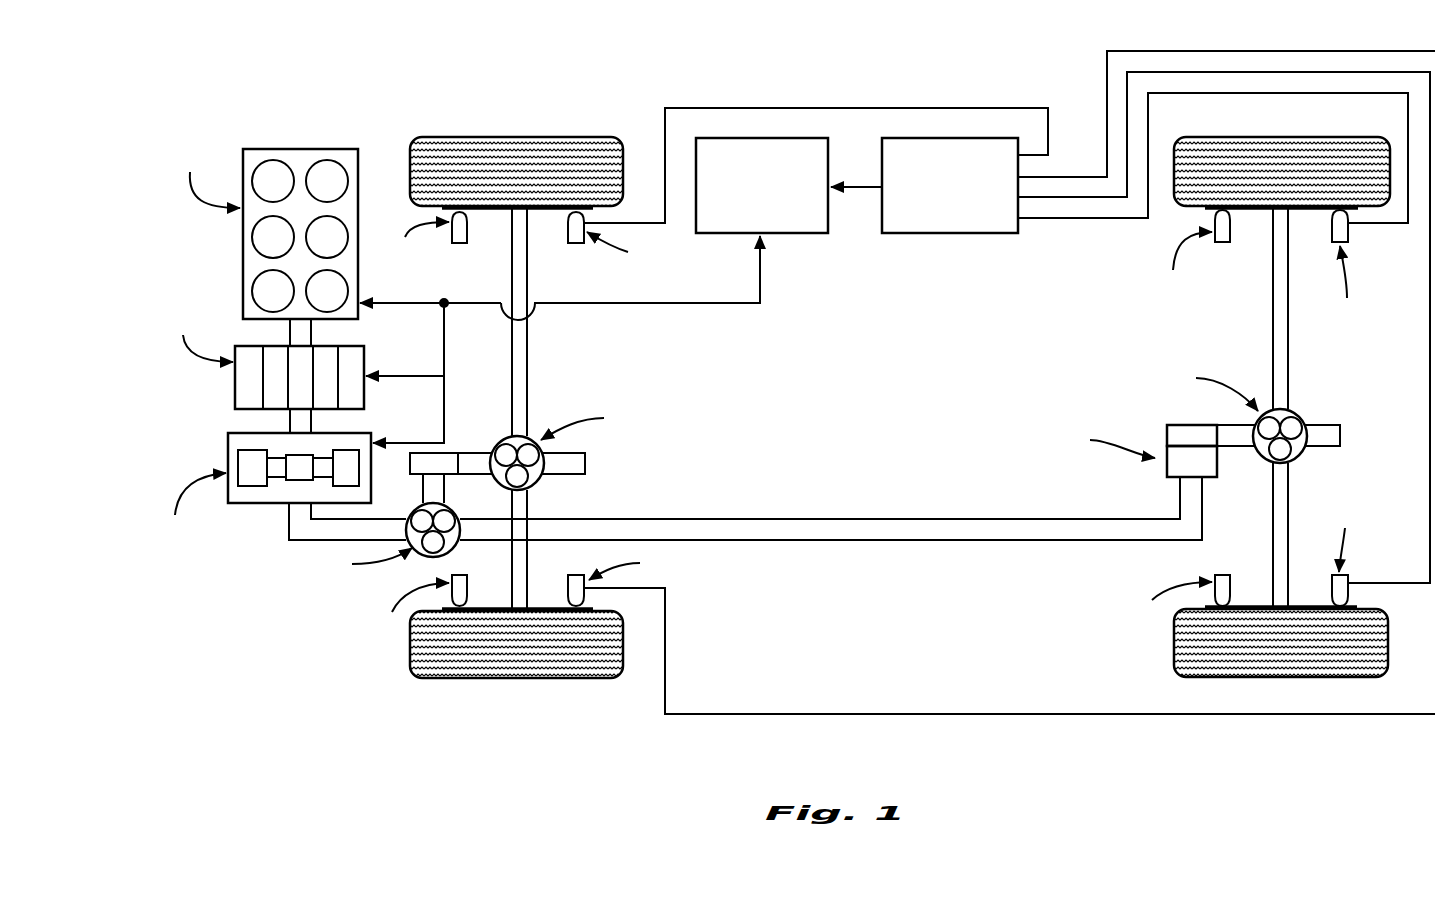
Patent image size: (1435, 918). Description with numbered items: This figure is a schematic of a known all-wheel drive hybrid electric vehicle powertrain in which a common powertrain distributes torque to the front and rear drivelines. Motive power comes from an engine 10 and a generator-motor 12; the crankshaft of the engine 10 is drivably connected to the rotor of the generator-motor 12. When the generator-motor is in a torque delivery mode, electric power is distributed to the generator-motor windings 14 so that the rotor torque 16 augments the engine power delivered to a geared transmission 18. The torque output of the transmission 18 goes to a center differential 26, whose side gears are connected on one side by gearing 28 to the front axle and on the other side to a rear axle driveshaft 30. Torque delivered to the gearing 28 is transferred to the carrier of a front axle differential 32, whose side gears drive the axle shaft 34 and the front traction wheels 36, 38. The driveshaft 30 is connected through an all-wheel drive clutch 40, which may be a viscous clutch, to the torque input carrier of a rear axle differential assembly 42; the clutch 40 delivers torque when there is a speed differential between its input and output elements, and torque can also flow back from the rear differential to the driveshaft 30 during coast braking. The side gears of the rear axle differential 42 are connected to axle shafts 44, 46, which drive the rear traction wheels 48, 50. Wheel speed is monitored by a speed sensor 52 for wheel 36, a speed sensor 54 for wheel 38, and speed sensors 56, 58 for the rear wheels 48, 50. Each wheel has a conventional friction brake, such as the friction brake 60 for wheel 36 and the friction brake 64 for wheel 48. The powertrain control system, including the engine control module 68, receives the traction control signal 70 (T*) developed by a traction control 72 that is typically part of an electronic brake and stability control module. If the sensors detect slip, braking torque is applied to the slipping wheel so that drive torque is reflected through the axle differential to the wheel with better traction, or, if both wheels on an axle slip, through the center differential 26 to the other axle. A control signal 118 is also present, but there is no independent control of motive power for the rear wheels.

The engine 10 is at (305, 150).
The generator-motor 12 is at (233, 378).
The generator-motor windings 14 is at (360, 362).
The rotor torque 16 is at (297, 397).
The geared transmission 18 is at (263, 503).
The center differential 26 is at (420, 558).
The gearing 28 is at (423, 490).
The rear axle driveshaft 30 is at (575, 520).
The front axle differential 32 is at (543, 437).
The axle shaft 34 is at (528, 341).
The front traction wheel 36 is at (597, 139).
The front traction wheel 38 is at (597, 678).
The all-wheel drive clutch 40 is at (1167, 430).
The rear axle differential assembly 42 is at (1296, 413).
The axle shaft 44 is at (1273, 313).
The axle shaft 46 is at (1273, 497).
The rear traction wheel 48 is at (1338, 138).
The rear traction wheel 50 is at (1350, 677).
The speed sensor 52 is at (570, 226).
The speed sensor 54 is at (571, 594).
The speed sensor 56 is at (1336, 225).
The speed sensor 58 is at (1334, 592).
The friction brake 60 is at (467, 226).
The friction brake 64 is at (1231, 226).
The engine control module 68 is at (795, 236).
The traction control signal (T*) 70 is at (853, 190).
The traction control 72 is at (978, 236).
The control signal 118 is at (685, 303).